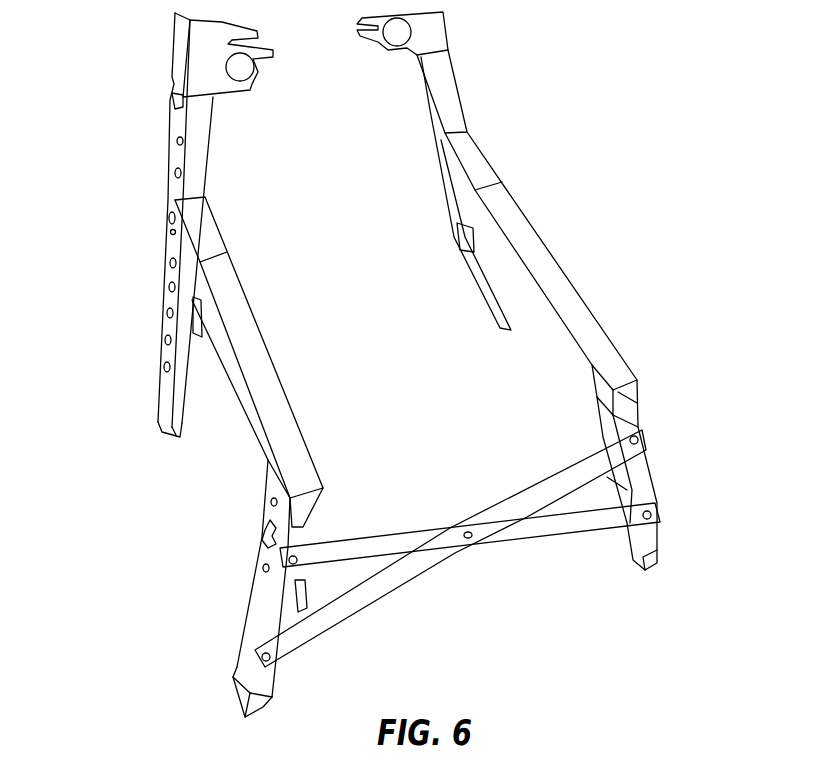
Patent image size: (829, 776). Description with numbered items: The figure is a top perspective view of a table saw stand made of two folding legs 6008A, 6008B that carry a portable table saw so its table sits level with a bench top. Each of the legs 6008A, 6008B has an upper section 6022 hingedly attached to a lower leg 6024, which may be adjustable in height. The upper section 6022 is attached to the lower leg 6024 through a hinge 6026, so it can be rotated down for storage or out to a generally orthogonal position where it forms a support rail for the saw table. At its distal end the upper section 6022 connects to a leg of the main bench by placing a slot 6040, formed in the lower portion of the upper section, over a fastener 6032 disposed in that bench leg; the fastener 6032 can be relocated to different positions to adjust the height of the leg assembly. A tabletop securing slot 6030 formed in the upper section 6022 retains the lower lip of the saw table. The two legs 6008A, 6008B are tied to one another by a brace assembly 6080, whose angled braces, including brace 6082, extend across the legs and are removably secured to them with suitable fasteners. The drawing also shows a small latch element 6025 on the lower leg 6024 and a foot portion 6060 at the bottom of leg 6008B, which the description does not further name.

The folding leg 6008A is at (277, 681).
The folding leg 6008B is at (534, 199).
The slot 6040 is at (164, 220).
The fastener 6032 is at (173, 232).
The tabletop securing slot 6030 is at (227, 254).
The hinge 6026 is at (269, 500).
The latch 6025 is at (262, 533).
The lower leg 6024 is at (258, 595).
The brace assembly 6080 is at (376, 571).
The angled brace 6082 is at (588, 467).
The leg 6060 is at (658, 552).
The upper section 6022 is at (553, 284).